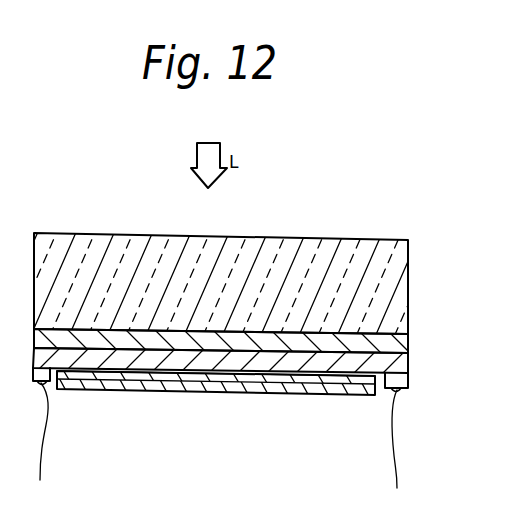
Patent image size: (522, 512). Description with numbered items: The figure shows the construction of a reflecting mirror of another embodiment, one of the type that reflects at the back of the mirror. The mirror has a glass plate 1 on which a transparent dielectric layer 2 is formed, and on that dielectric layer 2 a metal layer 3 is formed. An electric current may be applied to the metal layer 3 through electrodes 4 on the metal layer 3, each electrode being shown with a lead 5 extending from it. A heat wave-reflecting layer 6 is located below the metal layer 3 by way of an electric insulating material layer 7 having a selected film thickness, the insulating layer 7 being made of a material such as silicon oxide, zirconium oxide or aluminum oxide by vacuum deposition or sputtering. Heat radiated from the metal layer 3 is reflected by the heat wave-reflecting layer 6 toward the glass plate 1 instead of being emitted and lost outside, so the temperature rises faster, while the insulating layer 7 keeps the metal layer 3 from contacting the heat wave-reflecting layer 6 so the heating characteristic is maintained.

The glass plate 1 is at (409, 292).
The transparent dielectric layer 2 is at (409, 341).
The metal layer 3 is at (409, 368).
The electrodes 4 is at (409, 385).
The lead wires 5 is at (394, 457).
The heat wave-reflecting layer 6 is at (327, 396).
The electric insulating material layer 7 is at (380, 393).